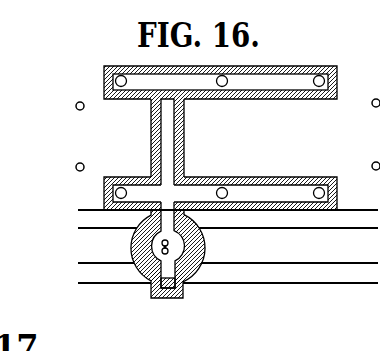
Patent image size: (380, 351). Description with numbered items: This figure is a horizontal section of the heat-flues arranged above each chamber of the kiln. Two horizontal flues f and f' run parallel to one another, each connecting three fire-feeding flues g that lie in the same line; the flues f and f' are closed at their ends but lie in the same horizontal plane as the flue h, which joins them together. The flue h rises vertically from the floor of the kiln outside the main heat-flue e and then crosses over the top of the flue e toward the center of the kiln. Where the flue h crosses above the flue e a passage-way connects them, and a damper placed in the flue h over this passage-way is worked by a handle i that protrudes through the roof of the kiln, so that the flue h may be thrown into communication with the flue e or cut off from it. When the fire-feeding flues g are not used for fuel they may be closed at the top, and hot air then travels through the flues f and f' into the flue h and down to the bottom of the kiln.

The flue f is at (220, 97).
The flue f' is at (220, 180).
The fire-feeding flue g is at (117, 88).
The flue h is at (172, 138).
The damper handle i is at (169, 247).
The main heat-flue e is at (228, 246).